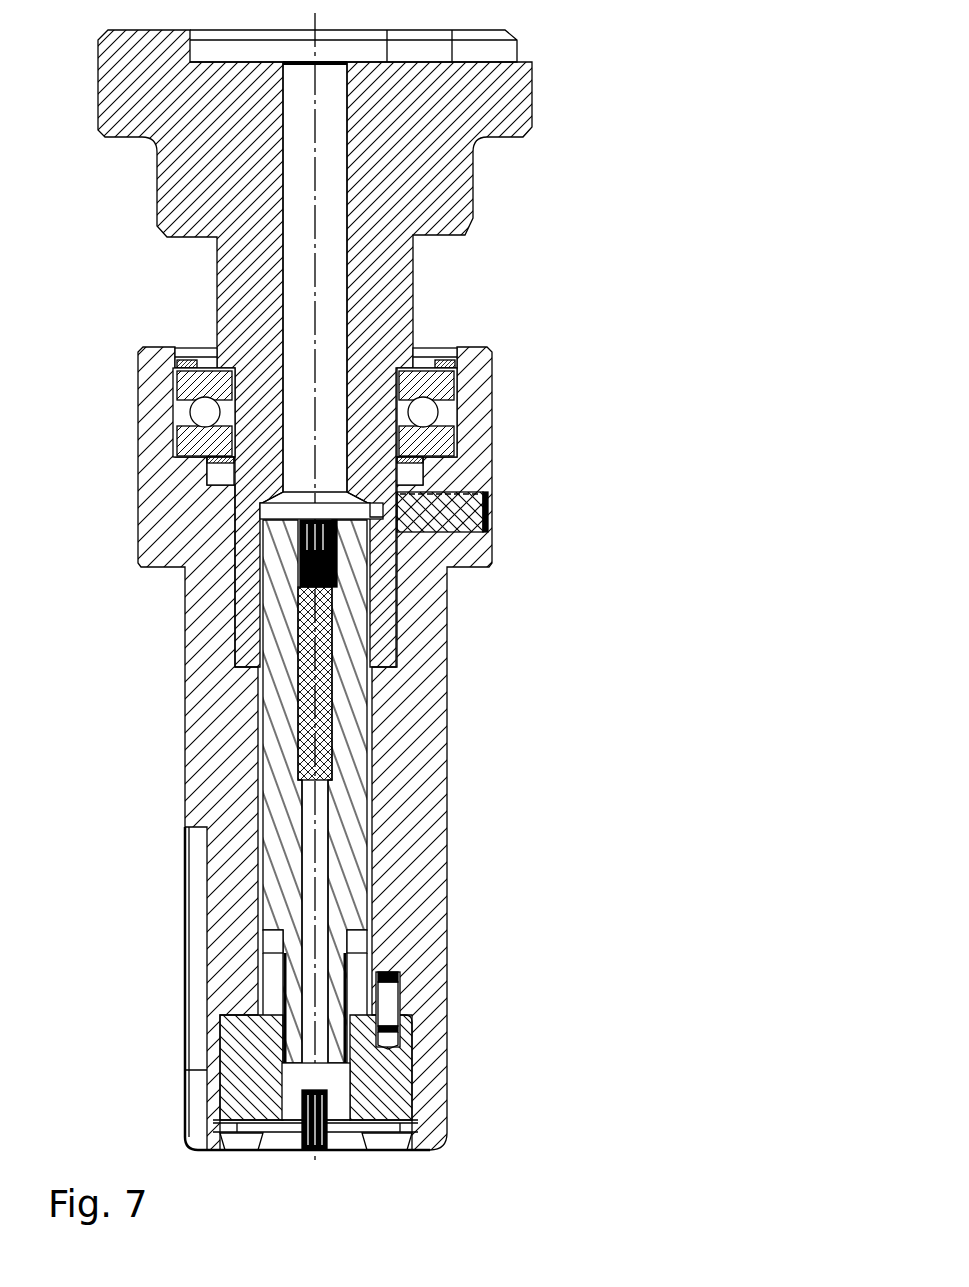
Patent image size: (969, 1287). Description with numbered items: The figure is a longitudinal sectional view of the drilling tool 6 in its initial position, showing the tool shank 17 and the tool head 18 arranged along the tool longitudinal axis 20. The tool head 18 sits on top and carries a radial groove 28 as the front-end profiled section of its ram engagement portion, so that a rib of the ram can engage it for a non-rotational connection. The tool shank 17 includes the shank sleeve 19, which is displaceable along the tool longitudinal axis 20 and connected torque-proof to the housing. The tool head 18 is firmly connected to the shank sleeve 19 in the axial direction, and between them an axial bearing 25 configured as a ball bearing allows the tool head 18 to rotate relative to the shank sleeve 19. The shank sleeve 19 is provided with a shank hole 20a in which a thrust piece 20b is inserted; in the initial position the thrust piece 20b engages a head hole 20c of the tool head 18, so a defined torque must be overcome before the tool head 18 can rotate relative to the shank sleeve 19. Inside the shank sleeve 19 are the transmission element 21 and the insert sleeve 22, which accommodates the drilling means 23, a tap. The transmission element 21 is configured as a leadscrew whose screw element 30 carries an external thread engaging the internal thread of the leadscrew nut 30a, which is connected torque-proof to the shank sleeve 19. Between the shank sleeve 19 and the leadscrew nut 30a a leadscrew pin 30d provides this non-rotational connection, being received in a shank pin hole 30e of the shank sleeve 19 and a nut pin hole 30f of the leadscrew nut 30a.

The drilling tool 6 is at (370, 589).
The tool shank 17 is at (447, 717).
The tool head 18 is at (538, 118).
The shank sleeve 19 is at (480, 378).
The tool longitudinal axis 20 is at (318, 248).
The shank hole 20a is at (489, 523).
The thrust piece 20b is at (475, 507).
The head hole 20c is at (382, 508).
The transmission element 21 is at (374, 839).
The insert sleeve 22 is at (287, 1008).
The drilling means 23 is at (328, 1152).
The axial bearing 25 is at (423, 412).
The radial groove 28 is at (477, 52).
The screw element 30 is at (281, 978).
The leadscrew nut 30a is at (415, 1093).
The leadscrew pin 30d is at (392, 1007).
The shank pin hole 30e is at (388, 970).
The nut pin hole 30f is at (400, 1037).